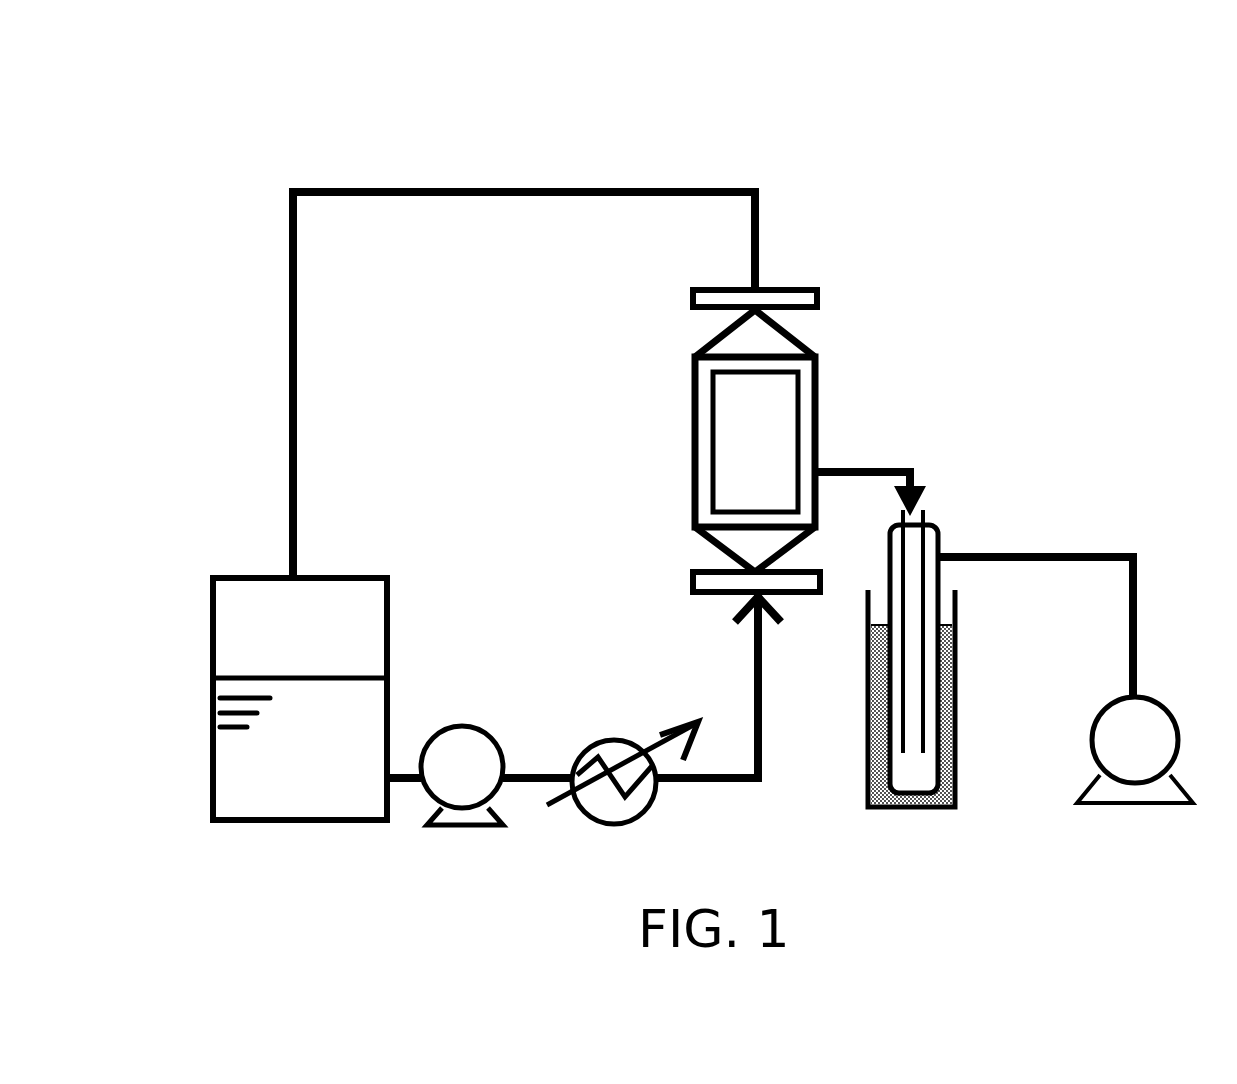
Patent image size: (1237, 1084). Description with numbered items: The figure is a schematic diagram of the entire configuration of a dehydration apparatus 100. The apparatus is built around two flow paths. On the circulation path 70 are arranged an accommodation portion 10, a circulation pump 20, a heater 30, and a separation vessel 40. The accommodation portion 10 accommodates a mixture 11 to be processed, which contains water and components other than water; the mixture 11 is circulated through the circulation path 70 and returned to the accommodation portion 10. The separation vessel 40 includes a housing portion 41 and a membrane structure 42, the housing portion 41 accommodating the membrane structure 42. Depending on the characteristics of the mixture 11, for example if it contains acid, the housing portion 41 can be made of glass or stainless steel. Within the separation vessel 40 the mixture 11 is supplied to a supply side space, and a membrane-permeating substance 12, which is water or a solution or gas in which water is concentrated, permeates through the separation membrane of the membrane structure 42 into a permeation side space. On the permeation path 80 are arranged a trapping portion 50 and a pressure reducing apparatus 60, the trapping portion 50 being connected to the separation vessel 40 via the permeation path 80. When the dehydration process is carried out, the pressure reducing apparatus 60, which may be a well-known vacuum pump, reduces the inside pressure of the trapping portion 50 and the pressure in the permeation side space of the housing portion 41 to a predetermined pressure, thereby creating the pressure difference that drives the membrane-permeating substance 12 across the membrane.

The dehydration apparatus 100 is at (960, 82).
The accommodation portion 10 is at (334, 663).
The mixture 11 is at (332, 761).
The membrane-permeating substance 12 is at (864, 468).
The circulation pump 20 is at (460, 727).
The heater 30 is at (612, 738).
The separation vessel 40 is at (685, 441).
The housing portion 41 is at (712, 451).
The membrane structure 42 is at (737, 490).
The trapping portion 50 is at (938, 537).
The pressure reducing apparatus 60 is at (1118, 697).
The circulation path 70 is at (300, 457).
The permeation path 80 is at (872, 416).